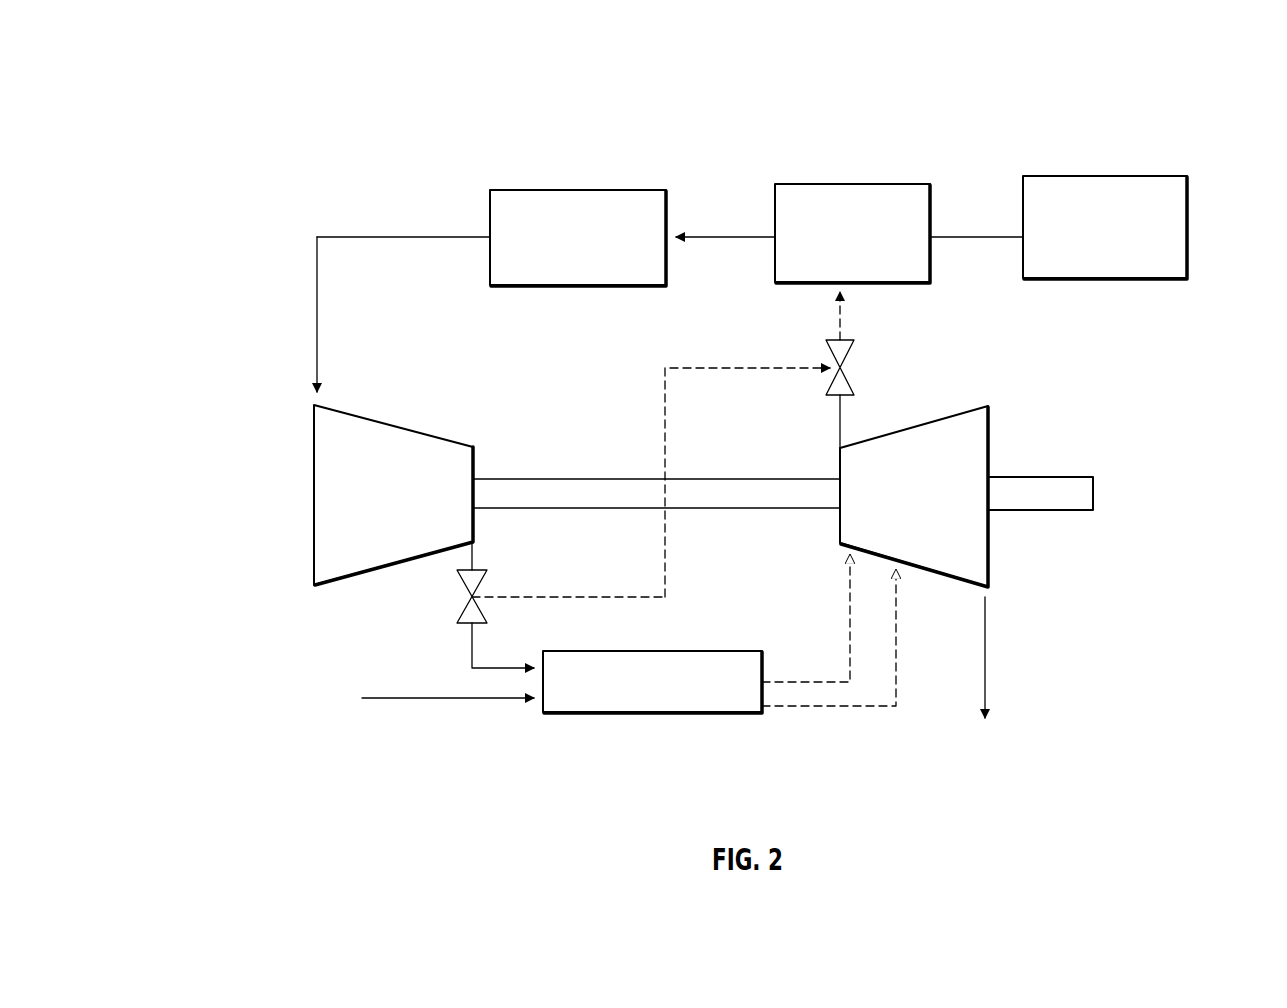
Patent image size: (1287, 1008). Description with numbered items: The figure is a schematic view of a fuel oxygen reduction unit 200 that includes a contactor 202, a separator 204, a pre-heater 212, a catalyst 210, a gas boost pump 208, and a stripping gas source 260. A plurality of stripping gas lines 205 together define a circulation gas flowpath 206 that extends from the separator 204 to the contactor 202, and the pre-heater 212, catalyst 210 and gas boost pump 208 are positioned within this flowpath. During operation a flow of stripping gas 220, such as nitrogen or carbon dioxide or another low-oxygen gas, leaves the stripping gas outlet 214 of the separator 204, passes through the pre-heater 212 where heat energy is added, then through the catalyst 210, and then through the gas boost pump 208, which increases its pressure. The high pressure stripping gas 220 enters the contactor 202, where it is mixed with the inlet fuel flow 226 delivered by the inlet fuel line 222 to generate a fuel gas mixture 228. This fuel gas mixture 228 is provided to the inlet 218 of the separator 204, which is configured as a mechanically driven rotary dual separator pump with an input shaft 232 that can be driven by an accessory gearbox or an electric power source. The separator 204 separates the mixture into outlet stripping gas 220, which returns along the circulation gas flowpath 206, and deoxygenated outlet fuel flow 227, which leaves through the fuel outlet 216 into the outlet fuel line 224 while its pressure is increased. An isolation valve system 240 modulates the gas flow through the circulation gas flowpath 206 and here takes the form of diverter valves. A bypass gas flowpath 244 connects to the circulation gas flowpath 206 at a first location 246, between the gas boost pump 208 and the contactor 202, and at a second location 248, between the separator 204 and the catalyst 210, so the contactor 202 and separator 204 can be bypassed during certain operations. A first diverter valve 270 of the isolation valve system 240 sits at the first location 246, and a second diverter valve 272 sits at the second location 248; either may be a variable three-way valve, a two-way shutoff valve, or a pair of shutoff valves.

The fuel oxygen reduction unit 200 is at (198, 151).
The contactor 202 is at (576, 712).
The separator 204 is at (840, 528).
The stripping gas line 205 is at (317, 317).
The circulation gas flowpath 206 is at (368, 237).
The gas boost pump 208 is at (313, 536).
The catalyst 210 is at (641, 190).
The pre-heater 212 is at (830, 184).
The stripping gas outlet 214 is at (863, 437).
The fuel outlet 216 is at (970, 583).
The inlet 218 is at (878, 553).
The stripping gas 220 is at (428, 240).
The inlet fuel line 222 is at (371, 699).
The outlet fuel line 224 is at (988, 687).
The inlet fuel flow 226 is at (462, 699).
The outlet fuel flow 227 is at (990, 655).
The fuel gas mixture 228 is at (807, 708).
The input shaft 232 is at (1028, 477).
The isolation valve system 240 is at (1010, 347).
The bypass gas flowpath 244 is at (665, 448).
The first location 246 is at (506, 560).
The second location 248 is at (832, 323).
The stripping gas source 260 is at (1186, 220).
The first diverter valve 270 is at (552, 573).
The second diverter valve 272 is at (784, 314).